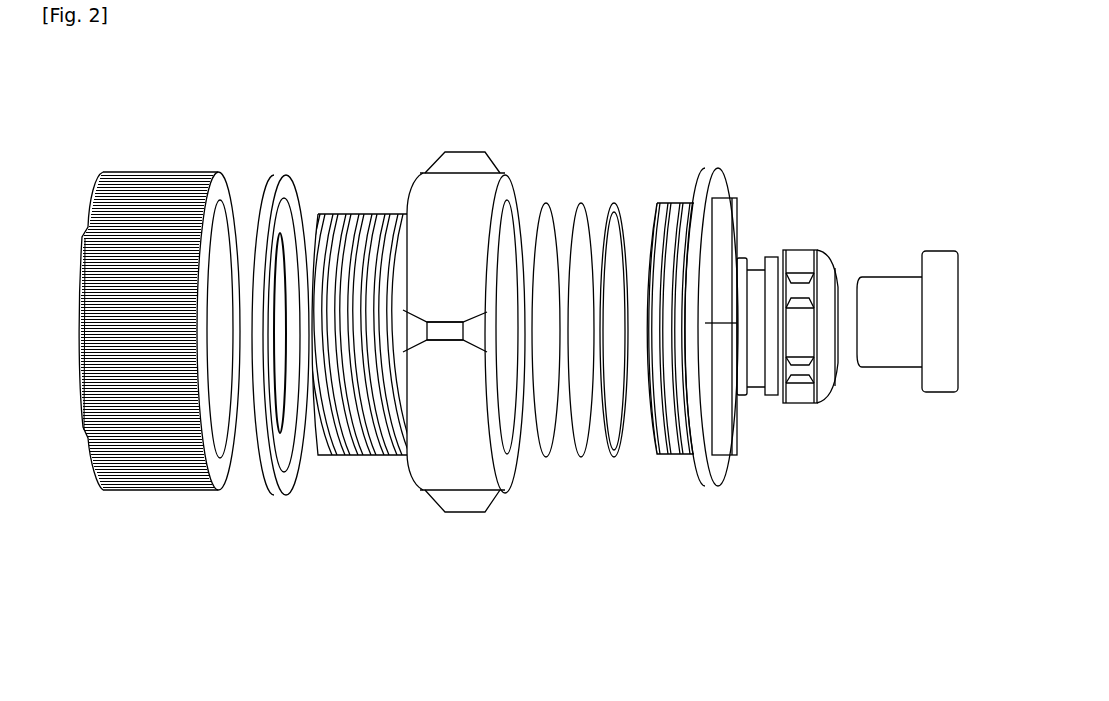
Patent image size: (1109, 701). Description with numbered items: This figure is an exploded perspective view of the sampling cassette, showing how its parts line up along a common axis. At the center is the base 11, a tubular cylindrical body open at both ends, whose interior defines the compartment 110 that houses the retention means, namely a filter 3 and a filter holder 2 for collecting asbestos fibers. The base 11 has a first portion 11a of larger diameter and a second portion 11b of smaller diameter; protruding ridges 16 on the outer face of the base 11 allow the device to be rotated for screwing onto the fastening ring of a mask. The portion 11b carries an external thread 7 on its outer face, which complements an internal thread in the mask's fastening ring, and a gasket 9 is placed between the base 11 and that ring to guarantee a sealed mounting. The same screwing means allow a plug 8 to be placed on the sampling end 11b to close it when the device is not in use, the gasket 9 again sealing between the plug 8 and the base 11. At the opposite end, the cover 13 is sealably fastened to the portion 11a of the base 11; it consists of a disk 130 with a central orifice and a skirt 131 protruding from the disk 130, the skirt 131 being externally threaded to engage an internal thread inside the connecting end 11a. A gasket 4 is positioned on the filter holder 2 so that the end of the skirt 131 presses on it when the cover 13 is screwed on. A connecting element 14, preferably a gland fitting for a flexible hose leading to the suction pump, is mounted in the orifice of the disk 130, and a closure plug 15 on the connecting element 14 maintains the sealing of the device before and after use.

The plug 8 is at (198, 220).
The gasket 9 is at (286, 190).
The external thread 7 is at (353, 456).
The second portion 11b is at (362, 327).
The base 11 is at (497, 326).
The first portion 11a is at (481, 213).
The protruding ridges 16 is at (447, 162).
The compartment 110 is at (507, 297).
The filter 3 is at (553, 238).
The filter holder 2 is at (585, 223).
The gasket 4 is at (611, 210).
The cover 13 is at (714, 294).
The skirt 131 is at (667, 455).
The disk 130 is at (717, 190).
The connecting element 14 is at (771, 262).
The closure plug 15 is at (902, 290).